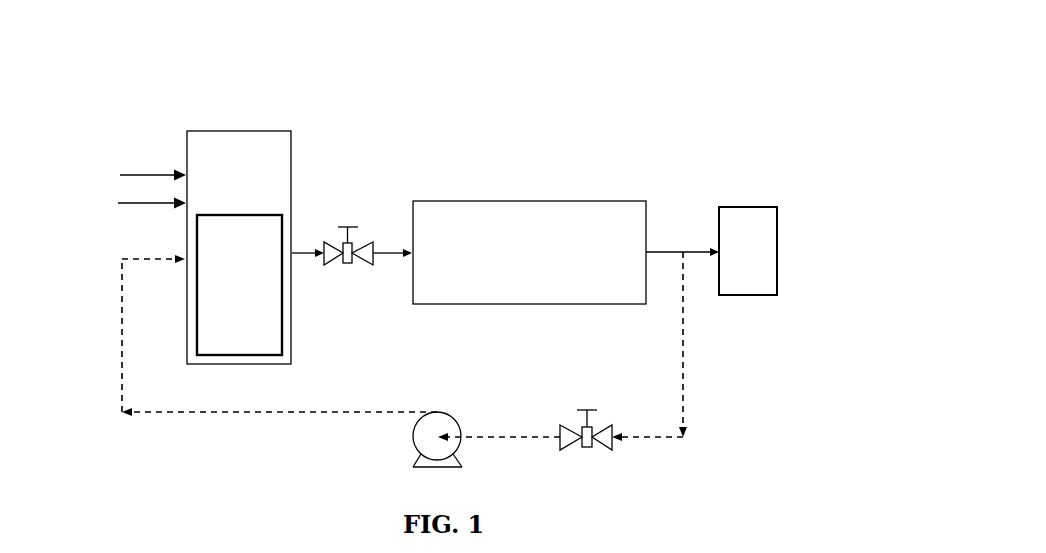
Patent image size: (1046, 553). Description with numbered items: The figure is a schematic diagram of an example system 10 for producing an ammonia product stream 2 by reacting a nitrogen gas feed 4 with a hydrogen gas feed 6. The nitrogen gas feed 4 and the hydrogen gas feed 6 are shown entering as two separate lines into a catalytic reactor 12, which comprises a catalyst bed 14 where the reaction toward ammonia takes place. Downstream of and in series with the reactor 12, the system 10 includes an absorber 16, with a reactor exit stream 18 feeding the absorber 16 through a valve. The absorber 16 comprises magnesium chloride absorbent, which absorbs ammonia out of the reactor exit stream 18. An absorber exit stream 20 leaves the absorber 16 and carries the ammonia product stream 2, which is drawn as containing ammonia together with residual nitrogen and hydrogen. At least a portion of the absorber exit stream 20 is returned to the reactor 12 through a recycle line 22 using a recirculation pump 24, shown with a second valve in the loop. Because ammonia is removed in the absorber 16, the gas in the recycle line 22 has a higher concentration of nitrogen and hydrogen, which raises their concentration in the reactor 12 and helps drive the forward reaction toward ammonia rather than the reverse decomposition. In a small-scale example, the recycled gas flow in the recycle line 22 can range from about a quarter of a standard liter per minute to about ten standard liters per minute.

The system 10 is at (640, 82).
The catalytic reactor 12 is at (200, 138).
The catalyst bed 14 is at (267, 313).
The nitrogen gas feed 4 is at (140, 175).
The hydrogen gas feed 6 is at (137, 203).
The reactor exit stream 18 is at (302, 252).
The absorber 16 is at (495, 200).
The absorber exit stream 20 is at (657, 250).
The ammonia product stream 2 is at (737, 207).
The recycle line 22 is at (683, 381).
The recirculation pump 24 is at (420, 442).